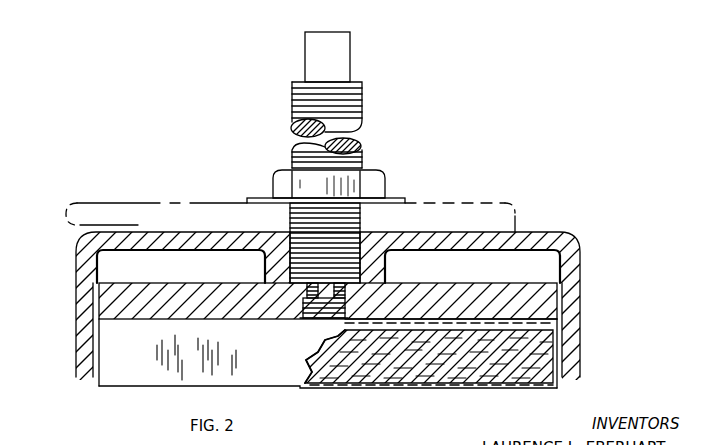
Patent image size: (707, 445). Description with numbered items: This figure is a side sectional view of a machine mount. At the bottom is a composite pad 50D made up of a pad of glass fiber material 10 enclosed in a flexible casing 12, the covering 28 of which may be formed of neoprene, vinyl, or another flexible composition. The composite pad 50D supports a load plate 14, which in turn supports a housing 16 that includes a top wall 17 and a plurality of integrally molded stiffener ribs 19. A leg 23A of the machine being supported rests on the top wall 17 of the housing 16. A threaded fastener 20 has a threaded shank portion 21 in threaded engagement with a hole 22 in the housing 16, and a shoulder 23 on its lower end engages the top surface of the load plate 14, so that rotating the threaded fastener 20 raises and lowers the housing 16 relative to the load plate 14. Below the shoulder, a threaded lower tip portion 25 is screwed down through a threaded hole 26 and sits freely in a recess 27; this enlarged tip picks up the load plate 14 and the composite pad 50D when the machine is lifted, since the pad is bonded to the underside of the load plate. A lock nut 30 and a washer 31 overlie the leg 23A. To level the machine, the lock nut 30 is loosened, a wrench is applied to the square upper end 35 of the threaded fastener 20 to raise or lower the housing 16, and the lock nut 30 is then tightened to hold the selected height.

The pad of glass fiber material 10 is at (508, 386).
The flexible casing 12 is at (460, 388).
The load plate 14 is at (498, 300).
The housing 16 is at (580, 277).
The top wall 17 is at (172, 232).
The stiffener ribs 19 is at (472, 258).
The threaded fastener 20 is at (365, 85).
The threaded shank portion 21 is at (365, 150).
The hole 22 is at (292, 232).
The shoulder 23 is at (357, 318).
The leg 23A is at (497, 203).
The threaded lower tip portion 25 is at (333, 318).
The threaded hole 26 is at (305, 290).
The recess 27 is at (296, 320).
The covering 28 is at (542, 310).
The lock nut 30 is at (271, 183).
The washer 31 is at (398, 199).
The square upper end 35 is at (348, 42).
The composite pad 50D is at (350, 388).